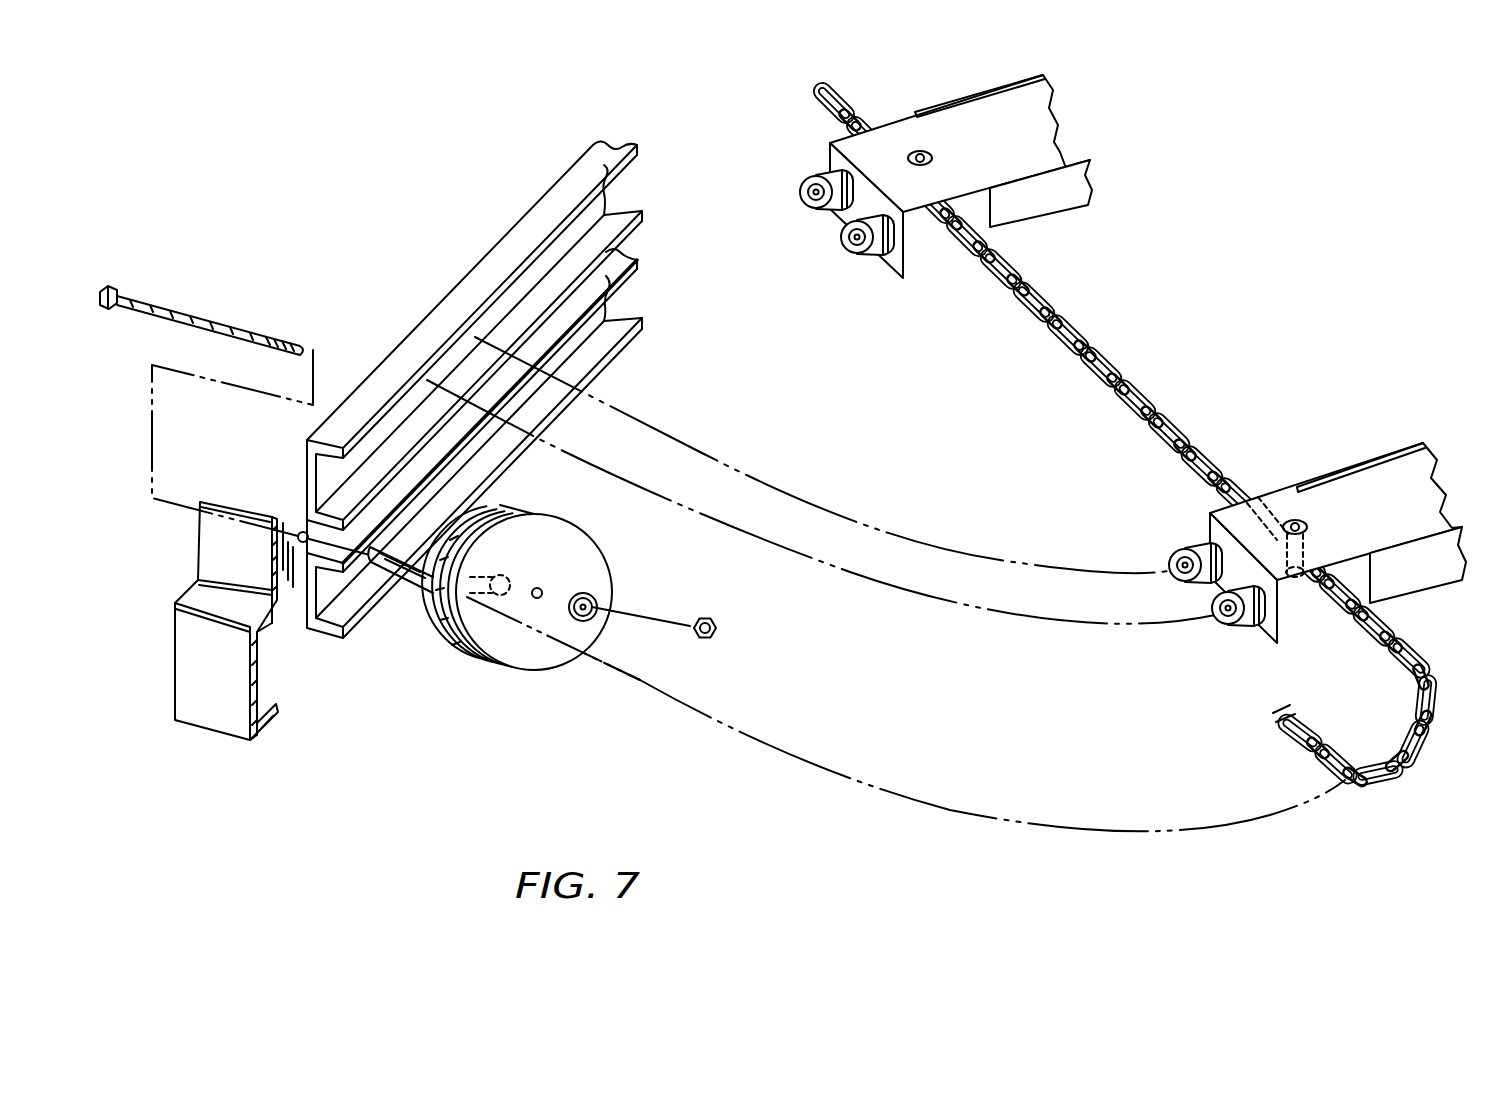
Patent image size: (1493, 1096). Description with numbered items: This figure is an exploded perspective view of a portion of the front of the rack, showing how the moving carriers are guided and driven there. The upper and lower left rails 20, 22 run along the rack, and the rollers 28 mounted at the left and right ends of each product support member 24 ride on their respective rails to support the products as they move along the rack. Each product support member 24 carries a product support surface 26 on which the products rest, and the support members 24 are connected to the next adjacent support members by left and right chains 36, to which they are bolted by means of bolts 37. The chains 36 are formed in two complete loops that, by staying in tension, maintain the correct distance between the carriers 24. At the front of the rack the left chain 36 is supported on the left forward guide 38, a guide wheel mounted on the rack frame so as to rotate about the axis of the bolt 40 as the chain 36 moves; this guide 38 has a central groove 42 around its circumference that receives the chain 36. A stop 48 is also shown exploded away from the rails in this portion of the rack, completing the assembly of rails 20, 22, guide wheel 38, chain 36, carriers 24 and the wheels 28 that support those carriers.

The left upper rail 20 is at (524, 215).
The lower left rail 22 is at (640, 334).
The product support member 24 is at (1062, 157).
The product support surface 26 is at (1036, 132).
The rollers 28 is at (836, 222).
The chain 36 is at (1113, 367).
The bolt 37 is at (924, 152).
The left forward guide 38 is at (580, 557).
The bolt 40 is at (250, 320).
The central groove 42 is at (495, 515).
The stop 48 is at (205, 545).